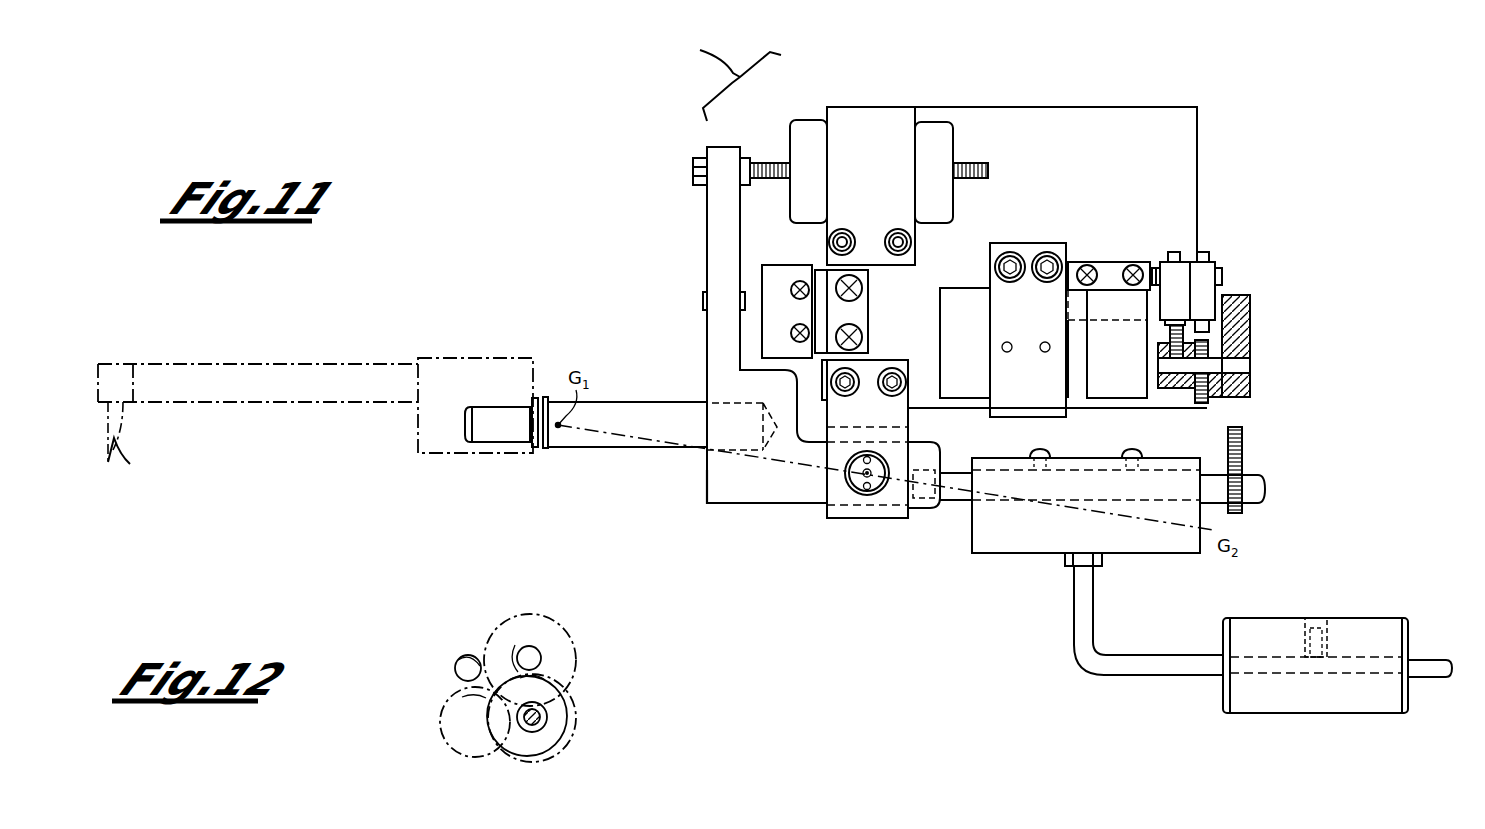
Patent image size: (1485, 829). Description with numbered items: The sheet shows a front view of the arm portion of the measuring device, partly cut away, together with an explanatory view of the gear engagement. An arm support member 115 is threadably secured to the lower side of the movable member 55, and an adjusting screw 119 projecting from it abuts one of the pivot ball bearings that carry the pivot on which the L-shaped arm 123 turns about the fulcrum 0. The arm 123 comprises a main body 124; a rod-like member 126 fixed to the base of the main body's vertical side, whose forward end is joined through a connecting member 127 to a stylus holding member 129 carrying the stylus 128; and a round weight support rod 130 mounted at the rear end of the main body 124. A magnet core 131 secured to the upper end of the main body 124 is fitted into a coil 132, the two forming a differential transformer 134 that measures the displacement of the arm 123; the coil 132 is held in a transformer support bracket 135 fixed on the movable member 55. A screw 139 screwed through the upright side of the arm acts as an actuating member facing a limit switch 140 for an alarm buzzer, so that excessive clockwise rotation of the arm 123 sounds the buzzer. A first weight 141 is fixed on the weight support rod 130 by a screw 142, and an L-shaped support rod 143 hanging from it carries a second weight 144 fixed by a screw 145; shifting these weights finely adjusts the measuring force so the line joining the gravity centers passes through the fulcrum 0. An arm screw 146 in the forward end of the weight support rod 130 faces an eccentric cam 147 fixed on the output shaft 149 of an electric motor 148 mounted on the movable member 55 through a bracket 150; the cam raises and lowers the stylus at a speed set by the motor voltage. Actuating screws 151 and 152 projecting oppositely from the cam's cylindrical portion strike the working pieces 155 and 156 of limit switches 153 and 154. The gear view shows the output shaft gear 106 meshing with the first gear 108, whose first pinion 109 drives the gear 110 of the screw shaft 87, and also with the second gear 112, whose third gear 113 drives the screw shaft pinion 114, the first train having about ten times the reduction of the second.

In FIG. 11, the fulcrum 0 is at (866, 482).
In FIG. 11, the movable member 55 is at (1192, 132).
In FIG. 12, the screw shaft 87 is at (550, 718).
In FIG. 12, the output shaft gear 106 is at (455, 674).
In FIG. 12, the first gear 108 is at (490, 642).
In FIG. 12, the first pinion 109 is at (545, 660).
In FIG. 12, the gear of screw shaft 110 is at (566, 753).
In FIG. 12, the second gear 112 is at (413, 722).
In FIG. 12, the third gear 113 is at (440, 720).
In FIG. 12, the screw shaft pinion 114 is at (520, 748).
In FIG. 11, the arm support member 115 is at (906, 520).
In FIG. 11, the adjusting screw 119 is at (842, 488).
In FIG. 11, the arm 123 is at (742, 505).
In FIG. 11, the main body 124 is at (705, 478).
In FIG. 11, the rod-like member 126 is at (540, 450).
In FIG. 11, the connecting member 127 is at (500, 455).
In FIG. 11, the stylus 128 is at (152, 471).
In FIG. 11, the stylus holding member 129 is at (385, 403).
In FIG. 11, the weight support rod 130 is at (1267, 483).
In FIG. 11, the magnet core 131 is at (764, 160).
In FIG. 11, the coil 132 is at (808, 122).
In FIG. 11, the differential transformer 134 is at (723, 78).
In FIG. 11, the transformer support bracket 135 is at (868, 115).
In FIG. 11, the screw 139 is at (703, 302).
In FIG. 11, the limit switch 140 is at (794, 265).
In FIG. 11, the first weight 141 is at (1034, 550).
In FIG. 11, the screw 142 is at (1039, 452).
In FIG. 11, the support rod 143 is at (1160, 668).
In FIG. 11, the second weight 144 is at (1306, 705).
In FIG. 11, the screw 145 is at (1326, 618).
In FIG. 11, the arm screw 146 is at (1242, 432).
In FIG. 11, the eccentric cam 147 is at (1238, 320).
In FIG. 11, the electric motor 148 is at (970, 296).
In FIG. 11, the output shaft 149 is at (1237, 368).
In FIG. 11, the bracket 150 is at (1048, 243).
In FIG. 11, the actuating screw 151 is at (1172, 340).
In FIG. 11, the actuating screw 152 is at (1202, 405).
In FIG. 11, the limit switch 153 is at (1170, 262).
In FIG. 11, the limit switch 154 is at (1204, 262).
In FIG. 11, the working piece 155 is at (1168, 331).
In FIG. 11, the working piece 156 is at (1213, 334).